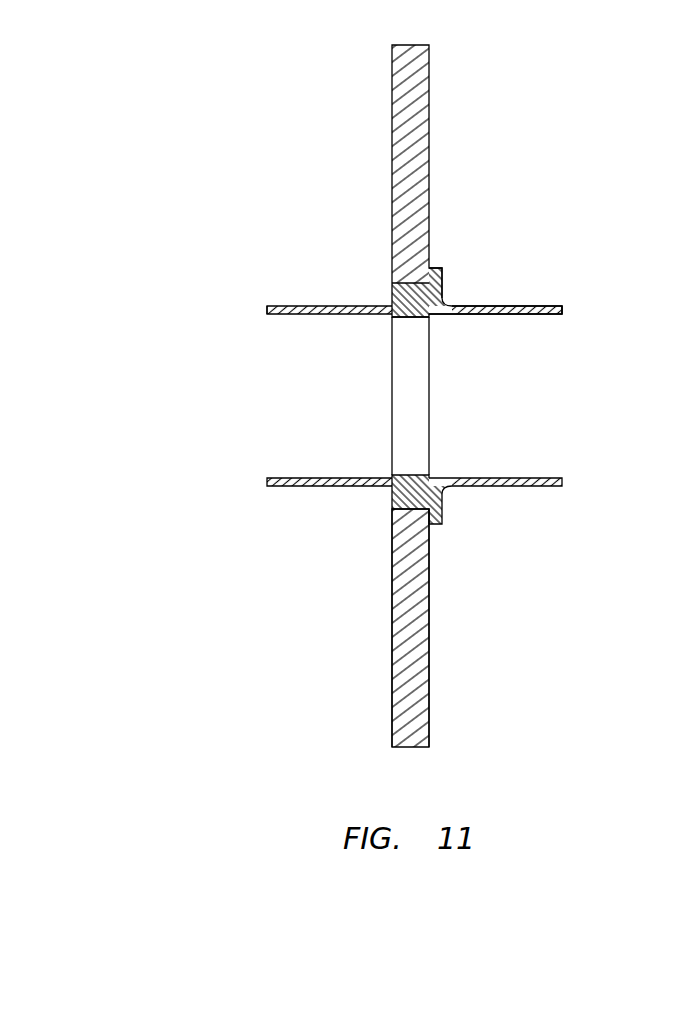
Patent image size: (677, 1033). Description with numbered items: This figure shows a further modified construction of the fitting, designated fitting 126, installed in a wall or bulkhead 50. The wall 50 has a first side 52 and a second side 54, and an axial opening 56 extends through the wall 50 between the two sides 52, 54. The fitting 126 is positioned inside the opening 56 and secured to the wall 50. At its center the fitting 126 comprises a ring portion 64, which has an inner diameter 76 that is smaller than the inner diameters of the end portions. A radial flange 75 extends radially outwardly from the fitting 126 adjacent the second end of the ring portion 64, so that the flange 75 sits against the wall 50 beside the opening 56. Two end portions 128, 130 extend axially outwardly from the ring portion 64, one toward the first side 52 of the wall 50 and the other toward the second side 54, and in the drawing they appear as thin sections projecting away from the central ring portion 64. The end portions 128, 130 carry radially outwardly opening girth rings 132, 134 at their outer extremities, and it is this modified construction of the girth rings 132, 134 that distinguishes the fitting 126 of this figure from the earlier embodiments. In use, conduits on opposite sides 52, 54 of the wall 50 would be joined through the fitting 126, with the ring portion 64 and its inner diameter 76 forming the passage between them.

The wall or bulkhead 50 is at (418, 620).
The first side 52 is at (392, 682).
The second side 54 is at (430, 644).
The axial opening 56 is at (391, 300).
The ring portion 64 is at (413, 493).
The radial flange 75 is at (441, 280).
The inner diameter 76 is at (408, 317).
The fitting 126 is at (414, 525).
The first end portion 128 is at (331, 306).
The second end portion 130 is at (499, 306).
The girth ring 132 is at (280, 307).
The girth ring 134 is at (549, 306).